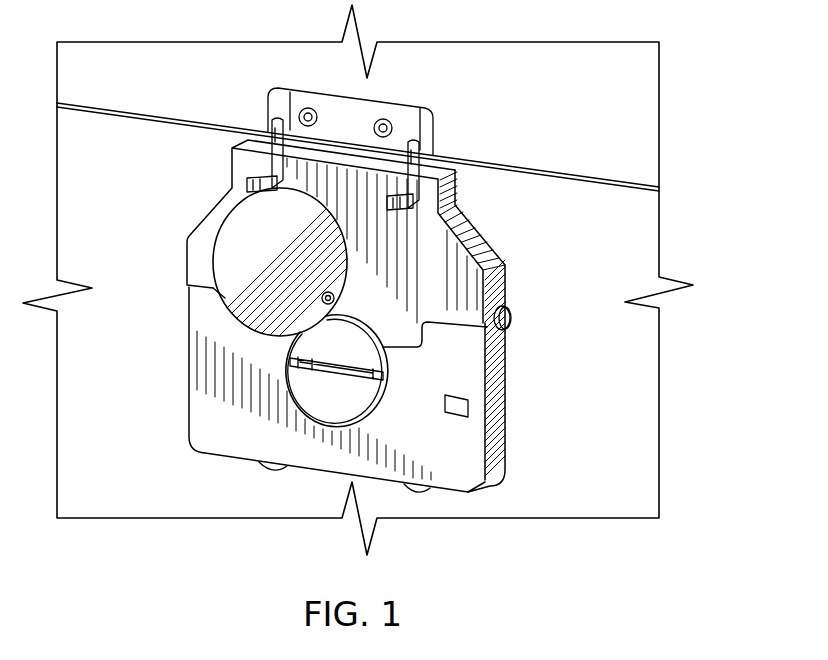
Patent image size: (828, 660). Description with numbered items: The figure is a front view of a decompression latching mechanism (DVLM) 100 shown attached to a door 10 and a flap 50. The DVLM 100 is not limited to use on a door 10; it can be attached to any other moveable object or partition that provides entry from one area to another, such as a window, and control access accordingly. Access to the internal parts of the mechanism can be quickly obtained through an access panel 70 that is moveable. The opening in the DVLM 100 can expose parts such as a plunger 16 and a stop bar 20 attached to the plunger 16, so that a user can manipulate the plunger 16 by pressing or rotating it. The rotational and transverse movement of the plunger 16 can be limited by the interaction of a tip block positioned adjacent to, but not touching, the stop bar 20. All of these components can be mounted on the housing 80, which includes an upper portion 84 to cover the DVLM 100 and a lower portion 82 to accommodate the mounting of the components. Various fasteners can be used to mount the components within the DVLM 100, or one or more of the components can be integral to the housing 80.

The door 10 is at (638, 73).
The flap 50 is at (630, 223).
The access panel 70 is at (213, 252).
The stop bar 20 is at (287, 386).
The plunger 16 is at (330, 405).
The lower portion 82 is at (500, 350).
The housing 80 is at (502, 390).
The upper portion 84 is at (465, 427).
The decompression latching mechanism 100 is at (443, 470).